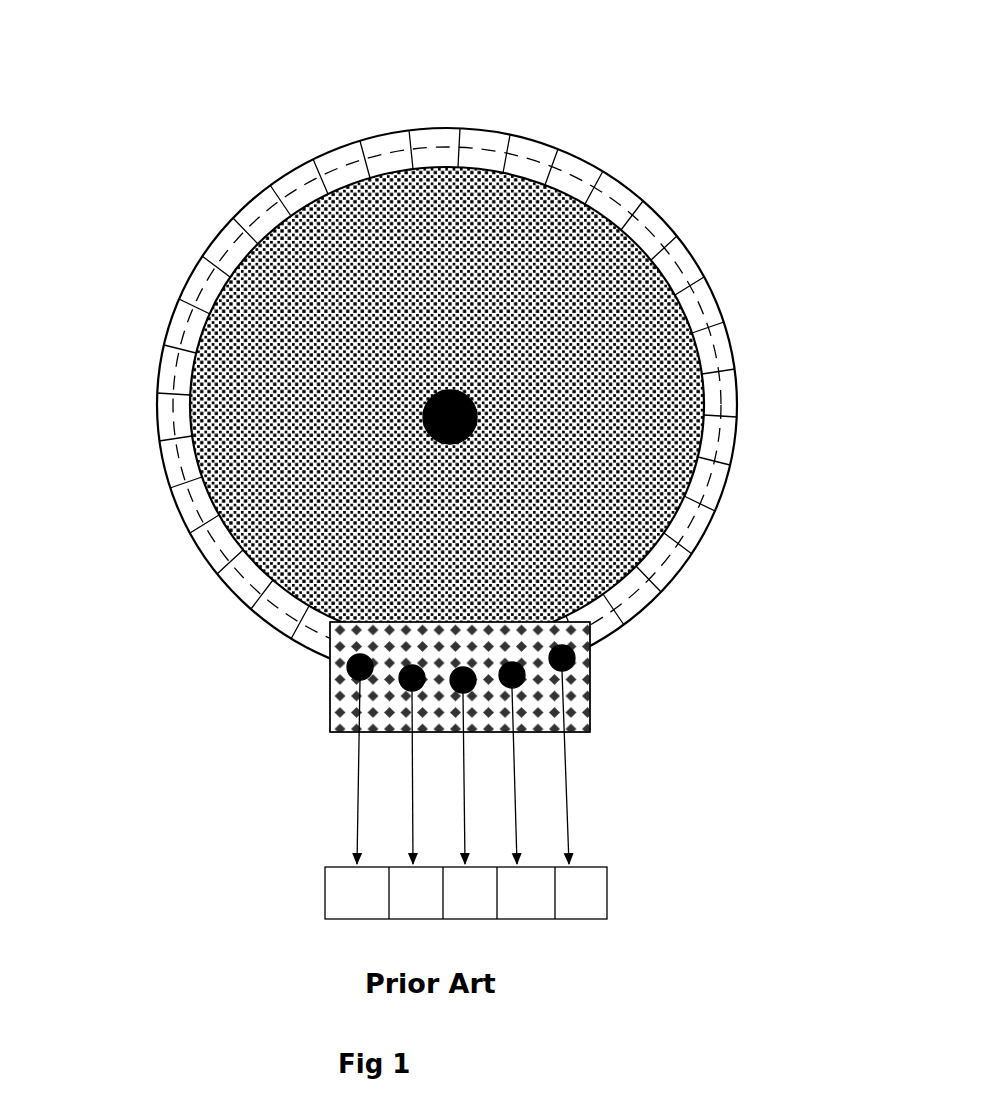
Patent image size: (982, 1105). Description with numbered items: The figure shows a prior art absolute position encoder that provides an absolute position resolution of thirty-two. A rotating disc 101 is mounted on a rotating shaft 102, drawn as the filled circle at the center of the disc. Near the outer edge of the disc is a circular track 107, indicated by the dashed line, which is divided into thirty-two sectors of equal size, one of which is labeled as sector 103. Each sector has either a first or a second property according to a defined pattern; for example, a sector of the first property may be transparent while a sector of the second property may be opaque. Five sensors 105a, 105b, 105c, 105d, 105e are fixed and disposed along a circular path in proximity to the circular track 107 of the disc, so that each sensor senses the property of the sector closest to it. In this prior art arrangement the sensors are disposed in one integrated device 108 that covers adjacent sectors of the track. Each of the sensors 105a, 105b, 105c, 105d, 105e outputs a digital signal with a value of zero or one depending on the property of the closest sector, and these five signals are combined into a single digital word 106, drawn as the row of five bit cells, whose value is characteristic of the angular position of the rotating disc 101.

The rotating disc 101 is at (582, 256).
The rotating shaft 102 is at (435, 388).
The sector 103 is at (240, 228).
The sensor 105a is at (346, 665).
The sensor 105b is at (406, 690).
The sensor 105c is at (472, 690).
The sensor 105d is at (522, 681).
The sensor 105e is at (577, 662).
The digital word 106 is at (322, 899).
The circular track 107 is at (482, 145).
The sensor block / read head region 108 is at (343, 720).